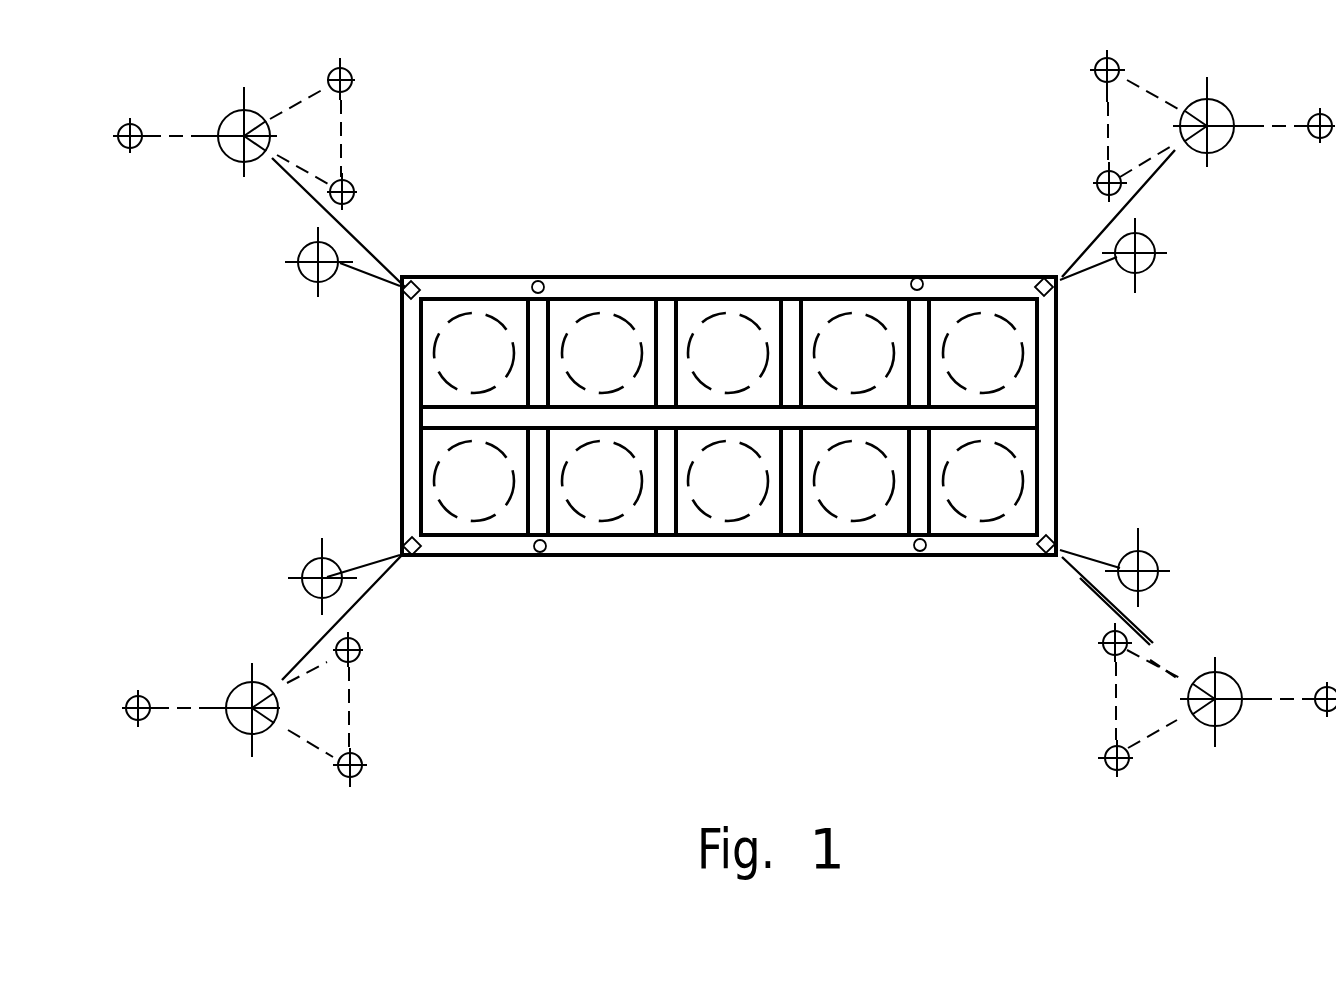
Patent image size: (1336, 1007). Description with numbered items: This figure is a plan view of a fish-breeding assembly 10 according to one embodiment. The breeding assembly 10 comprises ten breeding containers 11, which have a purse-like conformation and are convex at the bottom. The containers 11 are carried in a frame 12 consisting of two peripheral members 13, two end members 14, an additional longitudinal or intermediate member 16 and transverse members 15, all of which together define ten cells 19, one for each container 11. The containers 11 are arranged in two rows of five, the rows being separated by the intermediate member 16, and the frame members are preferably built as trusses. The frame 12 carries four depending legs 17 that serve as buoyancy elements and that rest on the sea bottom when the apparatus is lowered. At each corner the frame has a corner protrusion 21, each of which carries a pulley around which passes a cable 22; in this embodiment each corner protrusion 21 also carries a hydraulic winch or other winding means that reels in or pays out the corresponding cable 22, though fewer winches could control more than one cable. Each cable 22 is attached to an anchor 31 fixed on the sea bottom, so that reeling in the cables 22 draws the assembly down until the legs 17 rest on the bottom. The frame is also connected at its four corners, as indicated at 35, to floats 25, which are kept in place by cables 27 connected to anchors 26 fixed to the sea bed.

The breeding assembly 10 is at (826, 262).
The breeding container 11 is at (862, 510).
The frame 12 is at (1073, 493).
The peripheral member 13 is at (808, 592).
The end member 14 is at (1052, 428).
The transverse member 15 is at (543, 518).
The intermediate member 16 is at (1025, 415).
The depending leg 17 is at (550, 592).
The cell 19 is at (653, 282).
The corner protrusion 21 is at (440, 582).
The cable 22 is at (1110, 522).
The float 25 is at (1258, 653).
The anchor 26 is at (1105, 633).
The cable 27 is at (1218, 615).
The anchor 31 is at (1183, 533).
The connection 35 is at (1257, 570).